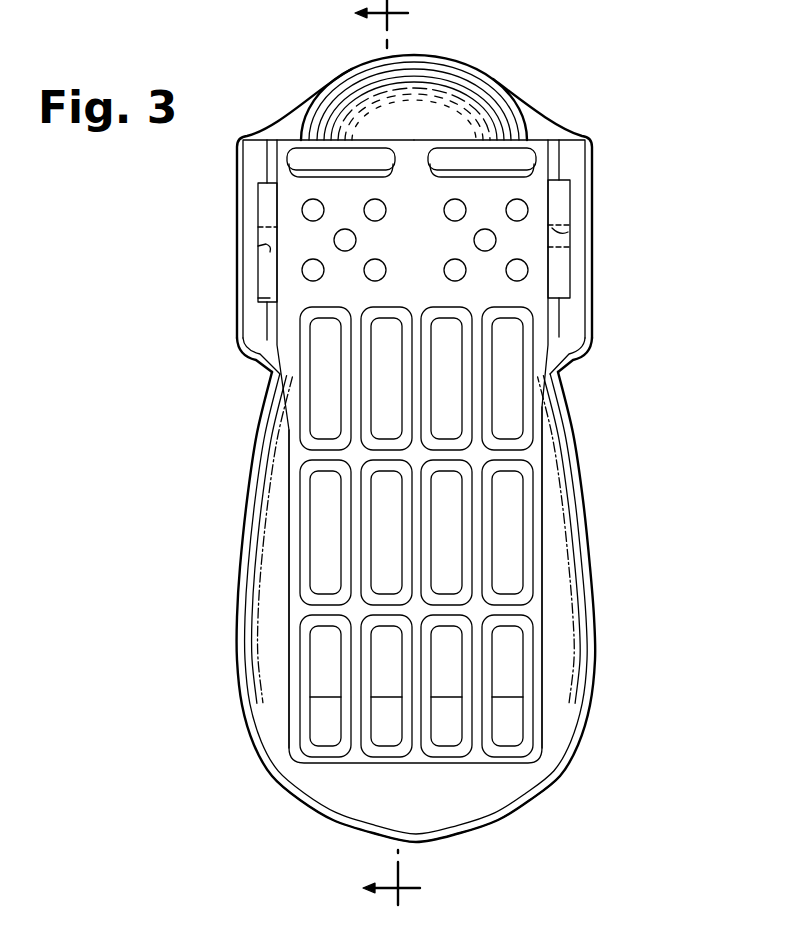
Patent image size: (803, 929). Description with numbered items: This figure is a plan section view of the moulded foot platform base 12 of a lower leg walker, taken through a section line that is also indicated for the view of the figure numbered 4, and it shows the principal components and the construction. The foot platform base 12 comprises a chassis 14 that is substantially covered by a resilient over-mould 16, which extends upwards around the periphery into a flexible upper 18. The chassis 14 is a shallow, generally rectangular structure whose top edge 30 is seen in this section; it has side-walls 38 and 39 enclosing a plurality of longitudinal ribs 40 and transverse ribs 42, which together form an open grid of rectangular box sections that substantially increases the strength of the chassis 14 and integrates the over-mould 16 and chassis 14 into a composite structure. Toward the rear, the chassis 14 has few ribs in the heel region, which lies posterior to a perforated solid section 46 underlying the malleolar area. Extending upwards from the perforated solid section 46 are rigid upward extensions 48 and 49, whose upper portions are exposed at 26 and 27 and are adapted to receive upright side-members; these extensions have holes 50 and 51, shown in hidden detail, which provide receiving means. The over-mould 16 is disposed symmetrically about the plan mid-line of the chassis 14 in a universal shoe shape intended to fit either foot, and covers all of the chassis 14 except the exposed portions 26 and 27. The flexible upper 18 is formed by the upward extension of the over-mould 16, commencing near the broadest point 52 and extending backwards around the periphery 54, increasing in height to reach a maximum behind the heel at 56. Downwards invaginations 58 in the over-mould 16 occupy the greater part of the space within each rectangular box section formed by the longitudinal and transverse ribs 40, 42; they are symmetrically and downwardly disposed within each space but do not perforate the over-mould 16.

The foot platform base 12 is at (602, 623).
The chassis 14 is at (548, 597).
The over-mould 16 is at (237, 679).
The flexible upper 18 is at (566, 445).
The exposed upward extension (malleolar area) 26 is at (248, 190).
The exposed upward extension (malleolar area) 27 is at (568, 168).
The top edge 30 is at (303, 453).
The side-wall 38 is at (543, 500).
The side-wall 39 is at (288, 530).
The longitudinal ribs 40 is at (350, 715).
The transverse ribs 42 is at (322, 596).
The perforated solid section 46 is at (421, 208).
The rigid upward extension 48 is at (268, 286).
The rigid upward extension 49 is at (562, 278).
The hole 50 is at (258, 246).
The hole 51 is at (572, 227).
The broadest point 52 is at (593, 690).
The periphery 54 is at (328, 808).
The maximum height behind the heel 56 is at (360, 63).
The downwards invaginations 58 is at (318, 386).
The section line 4- 4 is at (400, 452).